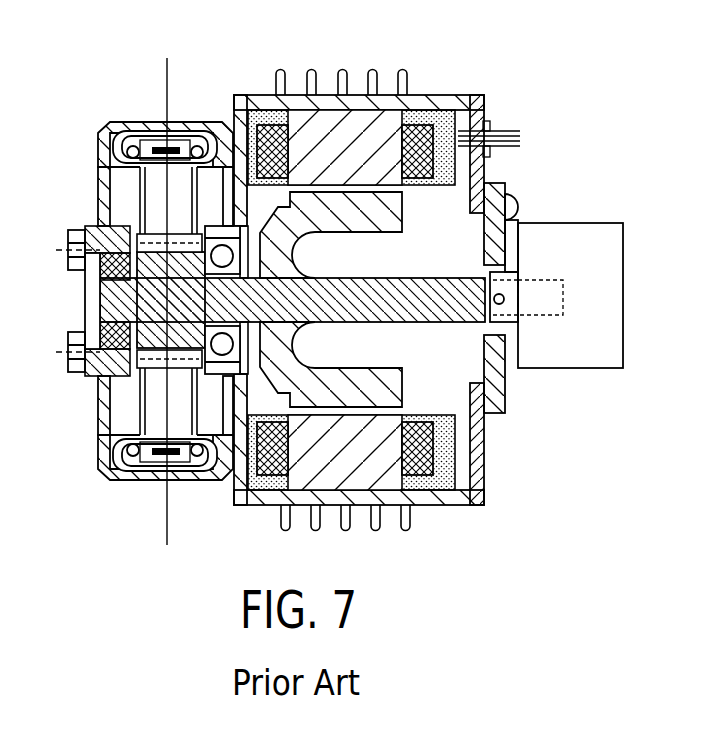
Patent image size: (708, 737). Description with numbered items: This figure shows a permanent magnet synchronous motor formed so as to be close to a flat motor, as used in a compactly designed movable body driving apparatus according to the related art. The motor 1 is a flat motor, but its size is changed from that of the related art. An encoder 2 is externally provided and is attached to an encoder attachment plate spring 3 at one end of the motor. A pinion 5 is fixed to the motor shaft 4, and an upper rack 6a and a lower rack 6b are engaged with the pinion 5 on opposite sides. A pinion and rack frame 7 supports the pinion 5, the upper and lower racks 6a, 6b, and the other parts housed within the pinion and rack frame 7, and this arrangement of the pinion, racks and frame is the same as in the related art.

The motor 1 is at (448, 90).
The encoder 2 is at (623, 270).
The encoder attachment plate spring 3 is at (517, 222).
The motor shaft 4 is at (168, 312).
The pinion 5 is at (145, 240).
The upper rack 6a is at (138, 187).
The lower rack 6b is at (140, 420).
The pinion and rack frame 7 is at (133, 116).